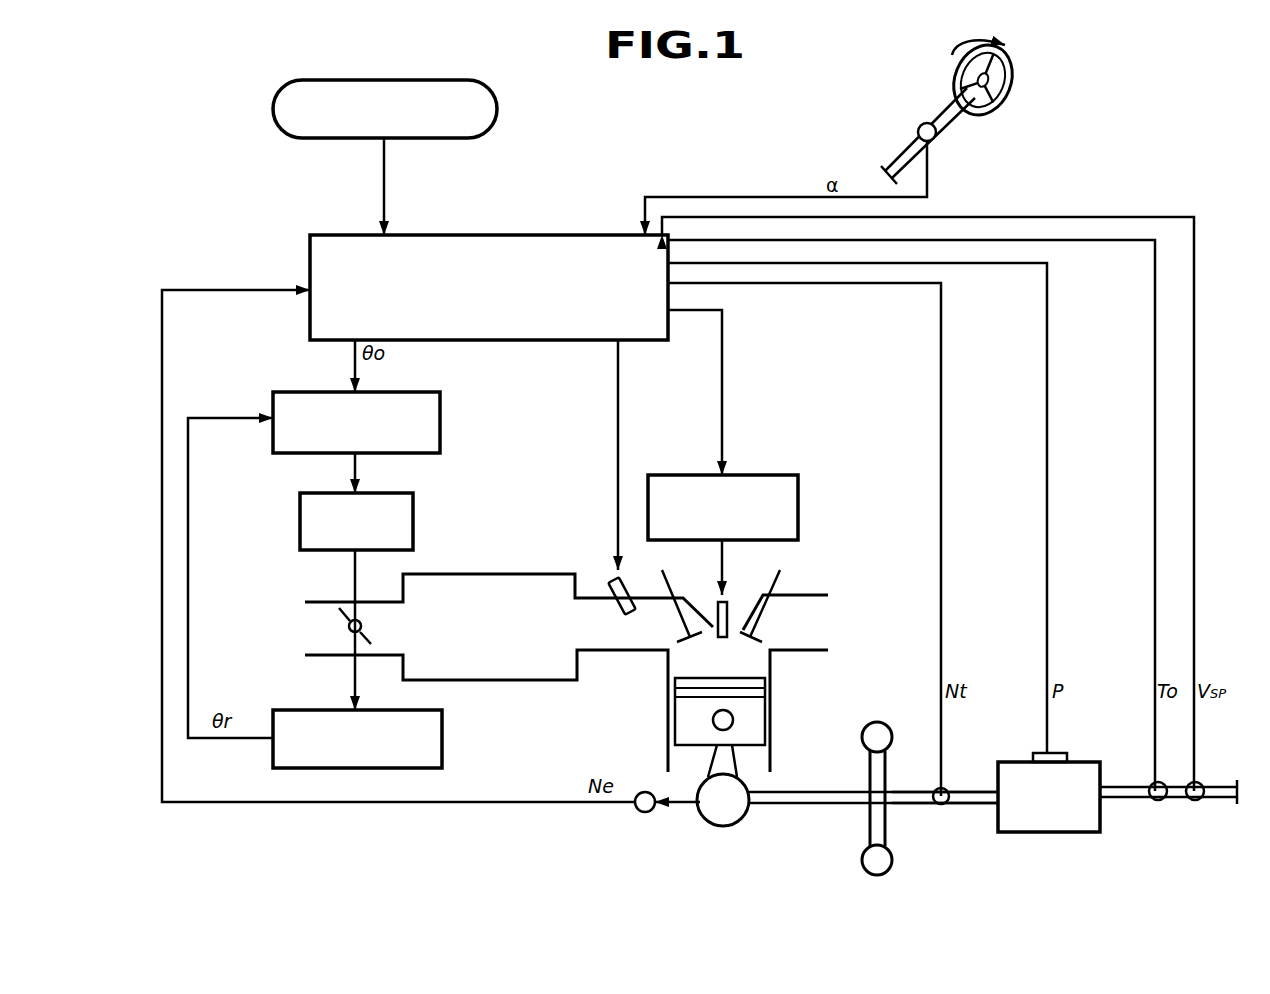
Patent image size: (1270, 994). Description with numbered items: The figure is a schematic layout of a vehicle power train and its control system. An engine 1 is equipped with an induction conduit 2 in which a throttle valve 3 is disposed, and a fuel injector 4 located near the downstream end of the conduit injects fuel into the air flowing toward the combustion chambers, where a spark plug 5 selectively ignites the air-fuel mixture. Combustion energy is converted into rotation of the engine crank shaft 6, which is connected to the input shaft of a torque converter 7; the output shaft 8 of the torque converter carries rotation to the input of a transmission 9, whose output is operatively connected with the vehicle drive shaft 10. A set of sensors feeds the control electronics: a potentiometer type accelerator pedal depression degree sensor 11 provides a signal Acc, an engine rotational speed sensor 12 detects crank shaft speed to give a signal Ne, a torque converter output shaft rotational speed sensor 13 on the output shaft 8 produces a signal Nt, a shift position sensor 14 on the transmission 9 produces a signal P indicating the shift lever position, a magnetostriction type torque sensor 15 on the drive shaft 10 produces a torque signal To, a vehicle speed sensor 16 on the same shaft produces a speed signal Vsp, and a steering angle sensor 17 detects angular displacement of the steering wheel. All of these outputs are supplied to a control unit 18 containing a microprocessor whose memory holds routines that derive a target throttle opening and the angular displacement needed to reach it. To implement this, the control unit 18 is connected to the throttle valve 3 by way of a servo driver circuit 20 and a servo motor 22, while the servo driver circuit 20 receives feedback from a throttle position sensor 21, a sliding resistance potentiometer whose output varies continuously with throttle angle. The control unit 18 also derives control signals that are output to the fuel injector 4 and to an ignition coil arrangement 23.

The engine 1 is at (822, 590).
The induction conduit 2 is at (320, 600).
The throttle valve 3 is at (369, 630).
The fuel injector 4 is at (612, 585).
The spark plug 5 is at (730, 610).
The engine crank shaft 6 is at (782, 803).
The torque converter 7 is at (862, 858).
The output shaft of the torque converter 8 is at (922, 806).
The transmission 9 is at (1063, 832).
The vehicle drive shaft 10 is at (1126, 800).
The accelerator pedal depression degree sensor 11 is at (497, 108).
The engine rotational speed sensor 12 is at (650, 812).
The torque converter output shaft rotational speed sensor 13 is at (947, 788).
The shift position sensor 14 is at (1060, 753).
The torque sensor 15 is at (1160, 800).
The vehicle speed sensor 16 is at (1197, 800).
The steering angle sensor 17 is at (918, 128).
The control unit 18 is at (476, 235).
The servo driver circuit 20 is at (440, 412).
The throttle position sensor 21 is at (442, 742).
The servo motor 22 is at (413, 522).
The ignition coil arrangement 23 is at (778, 475).